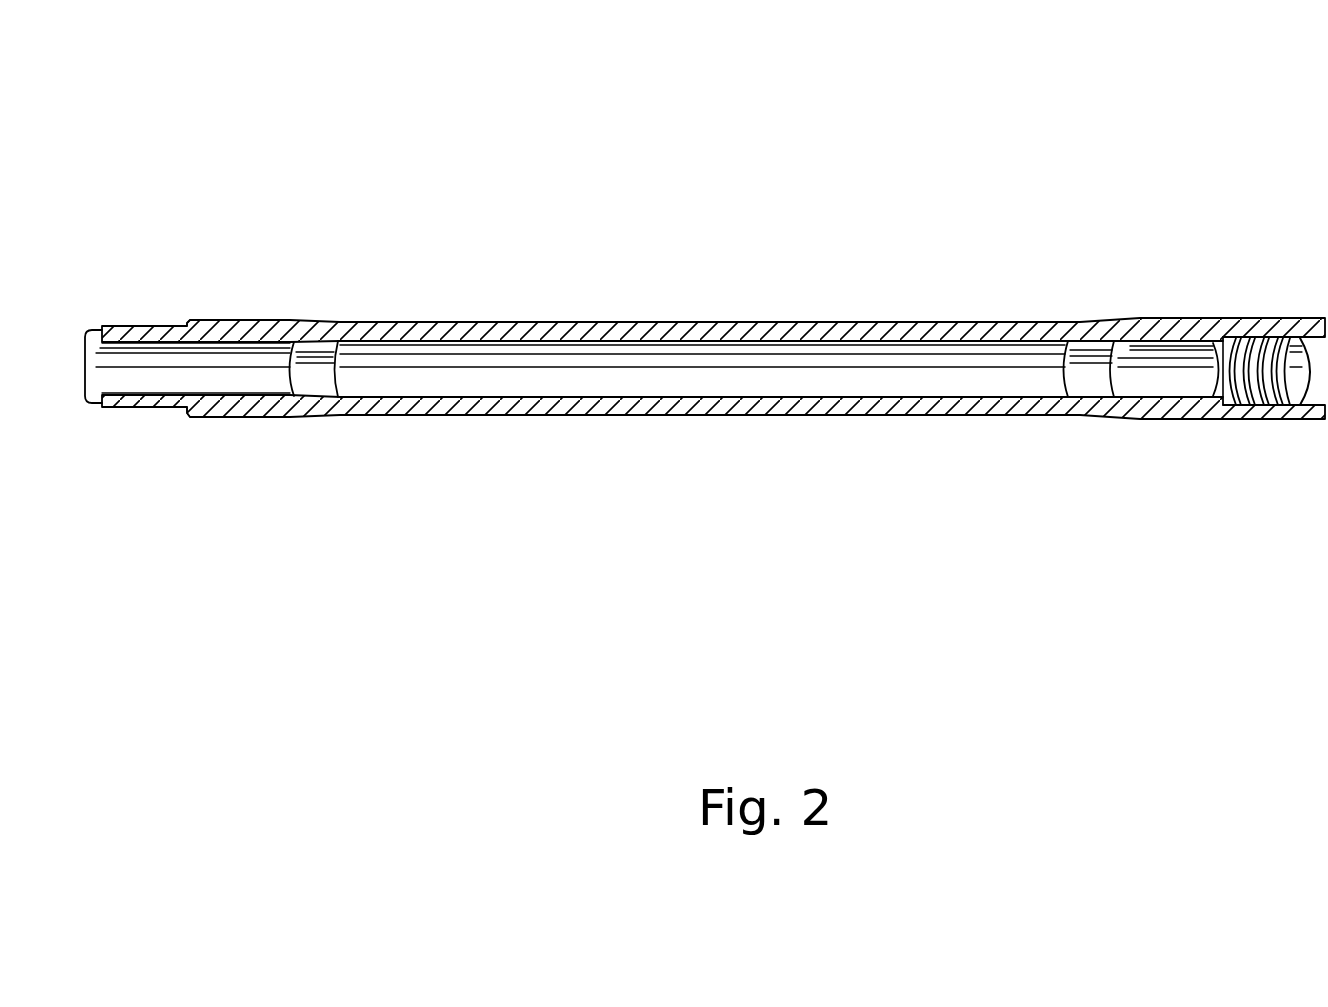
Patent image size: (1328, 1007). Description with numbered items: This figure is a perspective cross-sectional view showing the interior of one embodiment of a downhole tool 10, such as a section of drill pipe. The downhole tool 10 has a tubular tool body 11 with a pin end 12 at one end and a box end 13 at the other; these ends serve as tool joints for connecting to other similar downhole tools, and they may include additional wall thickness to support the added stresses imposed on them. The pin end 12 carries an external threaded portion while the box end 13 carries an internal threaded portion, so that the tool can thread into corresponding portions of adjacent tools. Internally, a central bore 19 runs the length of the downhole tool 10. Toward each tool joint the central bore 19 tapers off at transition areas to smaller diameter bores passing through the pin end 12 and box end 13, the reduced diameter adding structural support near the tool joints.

The downhole tool 10 is at (556, 128).
The tubular tool body 11 is at (628, 322).
The pin end 12 is at (256, 319).
The box end 13 is at (1255, 326).
The central bore 19 is at (753, 362).